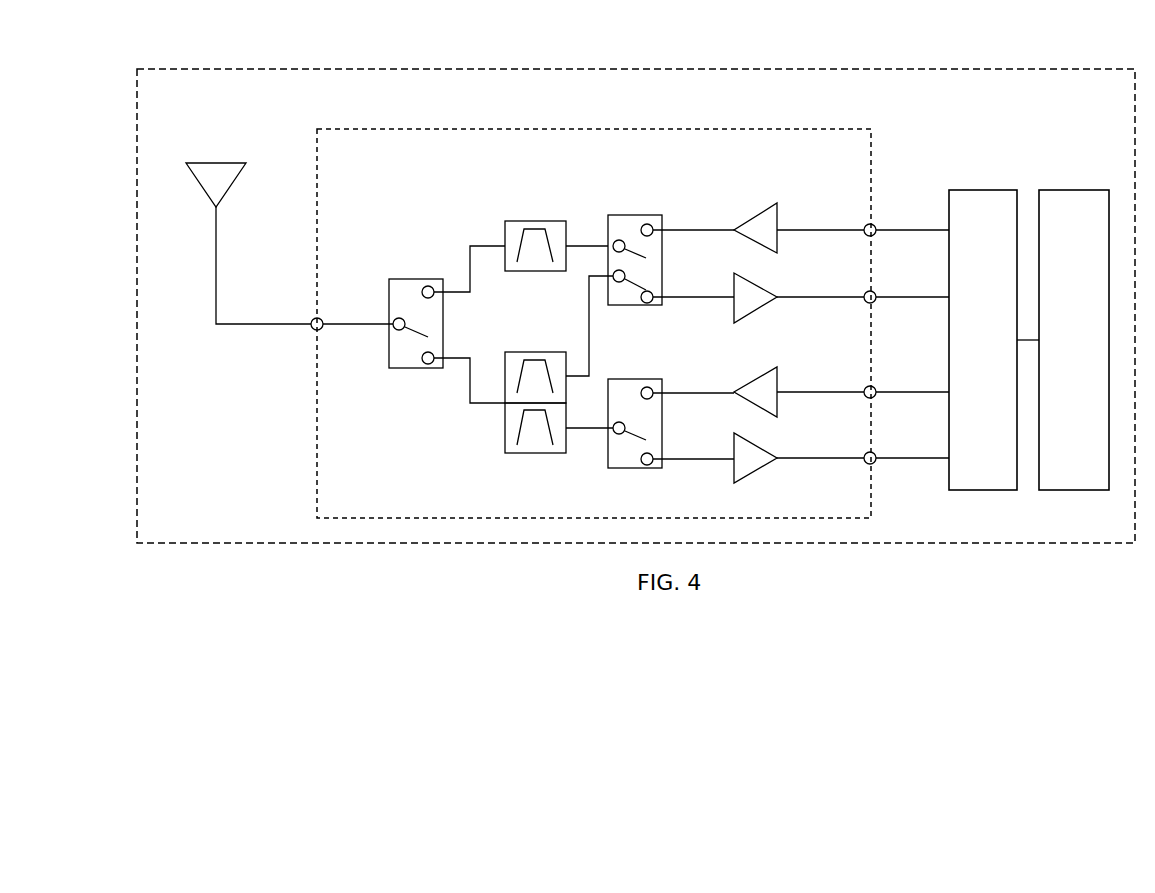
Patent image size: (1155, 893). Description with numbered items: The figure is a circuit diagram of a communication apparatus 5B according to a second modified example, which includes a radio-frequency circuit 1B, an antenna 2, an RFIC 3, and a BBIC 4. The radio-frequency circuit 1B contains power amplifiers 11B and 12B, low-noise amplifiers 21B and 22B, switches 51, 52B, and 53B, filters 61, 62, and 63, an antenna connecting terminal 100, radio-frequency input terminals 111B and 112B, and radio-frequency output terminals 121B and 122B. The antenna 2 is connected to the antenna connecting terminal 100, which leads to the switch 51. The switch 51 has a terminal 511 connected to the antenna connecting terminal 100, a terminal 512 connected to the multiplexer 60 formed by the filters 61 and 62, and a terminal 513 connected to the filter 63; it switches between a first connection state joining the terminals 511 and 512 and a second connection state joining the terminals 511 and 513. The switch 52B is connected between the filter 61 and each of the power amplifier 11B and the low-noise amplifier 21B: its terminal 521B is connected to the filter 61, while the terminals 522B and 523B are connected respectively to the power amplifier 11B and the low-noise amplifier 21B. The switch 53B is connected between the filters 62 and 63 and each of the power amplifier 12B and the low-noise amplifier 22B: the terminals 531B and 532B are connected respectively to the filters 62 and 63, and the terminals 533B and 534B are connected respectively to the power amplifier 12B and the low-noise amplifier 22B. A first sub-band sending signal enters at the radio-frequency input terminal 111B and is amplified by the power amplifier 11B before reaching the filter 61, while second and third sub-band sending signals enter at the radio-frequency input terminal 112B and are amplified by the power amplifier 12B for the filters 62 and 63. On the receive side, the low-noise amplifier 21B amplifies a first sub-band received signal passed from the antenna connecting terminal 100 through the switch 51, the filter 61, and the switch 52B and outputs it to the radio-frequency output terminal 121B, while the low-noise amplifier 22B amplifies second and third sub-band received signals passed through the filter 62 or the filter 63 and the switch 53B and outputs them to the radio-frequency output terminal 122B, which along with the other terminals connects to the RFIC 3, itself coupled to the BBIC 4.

The communication apparatus 5B is at (1098, 69).
The radio-frequency circuit 1B is at (836, 128).
The antenna 2 is at (214, 162).
The RFIC 3 is at (982, 189).
The BBIC 4 is at (1068, 189).
The antenna connecting terminal 100 is at (344, 300).
The switch 51 is at (416, 279).
The terminal 511 is at (393, 330).
The terminal 512 is at (432, 297).
The terminal 513 is at (427, 365).
The multiplexer 60 is at (483, 422).
The filter 61 is at (530, 453).
The filter 62 is at (533, 351).
The filter 63 is at (528, 220).
The switch 53B is at (640, 214).
The terminal 531B is at (617, 282).
The terminal 532B is at (616, 240).
The terminal 533B is at (652, 235).
The terminal 534B is at (651, 303).
The switch 52B is at (618, 378).
The terminal 521B is at (618, 434).
The terminal 522B is at (652, 398).
The terminal 523B is at (652, 465).
The power amplifier 12B is at (760, 213).
The low-noise amplifier 22B is at (775, 275).
The power amplifier 11B is at (760, 375).
The low-noise amplifier 21B is at (757, 446).
The radio-frequency input terminal 112B is at (866, 224).
The radio-frequency output terminal 122B is at (866, 291).
The radio-frequency input terminal 111B is at (866, 386).
The radio-frequency output terminal 121B is at (866, 452).